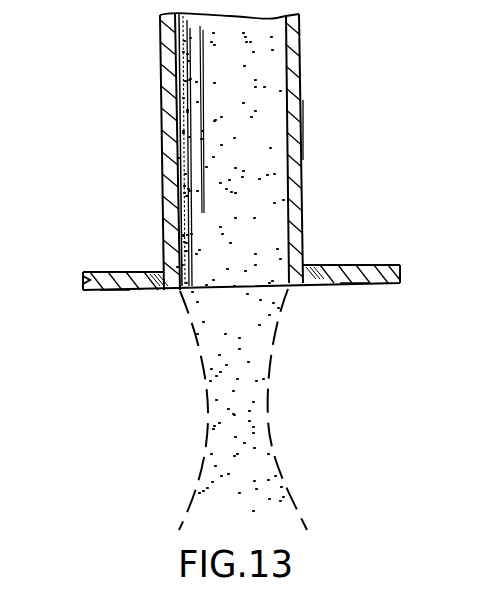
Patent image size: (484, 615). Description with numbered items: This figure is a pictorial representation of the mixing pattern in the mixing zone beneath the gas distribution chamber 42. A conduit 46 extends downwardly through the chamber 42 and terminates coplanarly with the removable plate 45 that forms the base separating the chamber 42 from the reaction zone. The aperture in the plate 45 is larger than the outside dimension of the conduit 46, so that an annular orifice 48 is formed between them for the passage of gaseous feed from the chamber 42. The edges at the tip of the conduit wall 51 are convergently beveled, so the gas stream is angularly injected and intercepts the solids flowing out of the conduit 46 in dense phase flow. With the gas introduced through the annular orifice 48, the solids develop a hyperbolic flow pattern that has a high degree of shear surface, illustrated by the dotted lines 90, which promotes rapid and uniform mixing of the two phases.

The gas distribution chamber 42 is at (140, 199).
The removable plate 45 is at (108, 291).
The conduit 46 is at (253, 162).
The annular orifice 48 is at (312, 276).
The conduit wall 51 is at (303, 128).
The dotted lines 90 is at (270, 405).